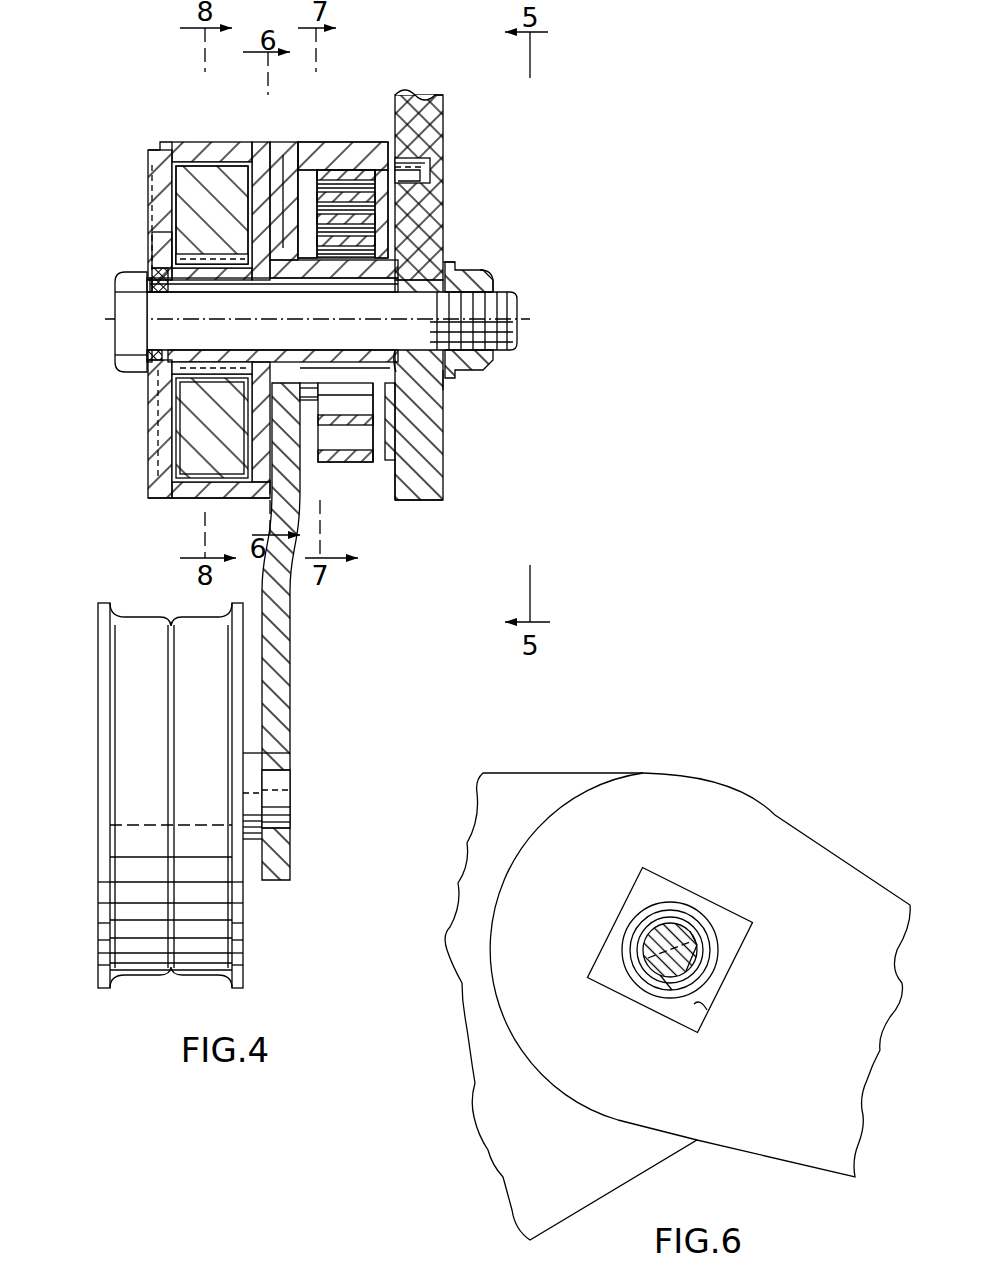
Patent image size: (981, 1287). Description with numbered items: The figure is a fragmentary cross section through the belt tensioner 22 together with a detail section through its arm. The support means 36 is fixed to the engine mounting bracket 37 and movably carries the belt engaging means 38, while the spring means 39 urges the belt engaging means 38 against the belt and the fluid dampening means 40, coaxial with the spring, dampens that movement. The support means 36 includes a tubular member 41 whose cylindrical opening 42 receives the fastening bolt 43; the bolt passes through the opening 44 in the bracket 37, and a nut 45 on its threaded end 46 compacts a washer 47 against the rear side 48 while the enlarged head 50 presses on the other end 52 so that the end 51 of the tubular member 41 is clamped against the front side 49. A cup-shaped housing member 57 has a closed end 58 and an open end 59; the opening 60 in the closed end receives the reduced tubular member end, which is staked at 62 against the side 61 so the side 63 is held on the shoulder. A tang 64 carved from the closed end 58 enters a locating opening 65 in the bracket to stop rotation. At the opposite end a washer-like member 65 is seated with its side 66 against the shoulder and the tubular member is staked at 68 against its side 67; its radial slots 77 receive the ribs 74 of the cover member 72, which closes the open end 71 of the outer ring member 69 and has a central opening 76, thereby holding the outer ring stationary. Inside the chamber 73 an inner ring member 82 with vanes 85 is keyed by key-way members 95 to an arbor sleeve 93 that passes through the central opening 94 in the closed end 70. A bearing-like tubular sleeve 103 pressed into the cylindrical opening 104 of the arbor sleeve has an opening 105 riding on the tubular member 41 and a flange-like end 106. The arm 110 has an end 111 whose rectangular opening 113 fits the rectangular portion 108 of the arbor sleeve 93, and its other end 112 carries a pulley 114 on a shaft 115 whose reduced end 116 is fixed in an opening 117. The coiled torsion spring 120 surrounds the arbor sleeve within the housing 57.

In FIG. 4, the belt tensioner 22 is at (118, 97).
In FIG. 4, the support means 36 is at (340, 378).
In FIG. 6, the support means 36 is at (712, 918).
In FIG. 4, the mounting bracket 37 is at (440, 488).
In FIG. 6, the mounting bracket 37 is at (504, 1177).
In FIG. 4, the belt engaging means 38 is at (308, 730).
In FIG. 4, the spring means 39 is at (343, 166).
In FIG. 4, the fluid dampening means 40 is at (200, 455).
In FIG. 4, the tubular member 41 is at (405, 298).
In FIG. 6, the tubular member 41 is at (652, 963).
In FIG. 4, the cylindrical opening 42 is at (306, 284).
In FIG. 4, the fastening bolt 43 is at (145, 332).
In FIG. 6, the fastening bolt 43 is at (660, 968).
In FIG. 4, the opening 44 is at (386, 290).
In FIG. 4, the nut 45 is at (494, 281).
In FIG. 4, the threaded end 46 is at (518, 306).
In FIG. 4, the washer 47 is at (462, 270).
In FIG. 4, the rear side 48 is at (443, 460).
In FIG. 4, the front side 49 is at (400, 490).
In FIG. 4, the enlarged head 50 is at (118, 300).
In FIG. 4, the end 51 is at (430, 262).
In FIG. 4, the other end 52 is at (147, 360).
In FIG. 4, the cup-shaped housing member 57 is at (331, 145).
In FIG. 4, the closed end 58 is at (396, 433).
In FIG. 4, the open end 59 is at (292, 150).
In FIG. 4, the opening 60 is at (394, 350).
In FIG. 4, the side 61 is at (430, 385).
In FIG. 4, the staking 62 is at (494, 366).
In FIG. 4, the side 63 is at (378, 456).
In FIG. 4, the tang 64 is at (422, 178).
In FIG. 4, the washer-like member 65 is at (428, 164).
In FIG. 4, the side 66 is at (212, 240).
In FIG. 4, the side 67 is at (165, 274).
In FIG. 4, the staking 68 is at (147, 283).
In FIG. 4, the outer ring member 69 is at (203, 142).
In FIG. 4, the closed end 70 is at (278, 176).
In FIG. 4, the open end 71 is at (158, 147).
In FIG. 4, the cover member 72 is at (150, 170).
In FIG. 4, the chamber 73 is at (205, 438).
In FIG. 4, the ribs 74 is at (150, 494).
In FIG. 4, the central opening 76 is at (200, 360).
In FIG. 4, the radially disposed slots 77 is at (176, 404).
In FIG. 4, the inner ring member 82 is at (168, 240).
In FIG. 4, the vanes 85 is at (196, 178).
In FIG. 4, the arbor sleeve 93 is at (196, 282).
In FIG. 6, the arbor sleeve 93 is at (720, 956).
In FIG. 4, the central opening 94 is at (290, 368).
In FIG. 4, the key-way members 95 is at (212, 428).
In FIG. 4, the bearing-like tubular sleeve 103 is at (312, 402).
In FIG. 6, the bearing-like tubular sleeve 103 is at (670, 1000).
In FIG. 4, the cylindrical opening 104 is at (218, 372).
In FIG. 6, the cylindrical opening 104 is at (636, 936).
In FIG. 6, the opening 105 is at (700, 944).
In FIG. 4, the enlarged flange-like end 106 is at (150, 378).
In FIG. 6, the intermediate rectangular portion 108 is at (683, 903).
In FIG. 4, the arm 110 is at (292, 668).
In FIG. 6, the arm 110 is at (838, 857).
In FIG. 4, the end 111 is at (283, 165).
In FIG. 4, the other end 112 is at (290, 864).
In FIG. 6, the rectangular opening 113 is at (706, 1012).
In FIG. 4, the pulley 114 is at (100, 906).
In FIG. 4, the shaft 115 is at (286, 798).
In FIG. 4, the reduced end 116 is at (286, 833).
In FIG. 4, the opening 117 is at (284, 776).
In FIG. 4, the coiled torsion spring 120 is at (443, 100).